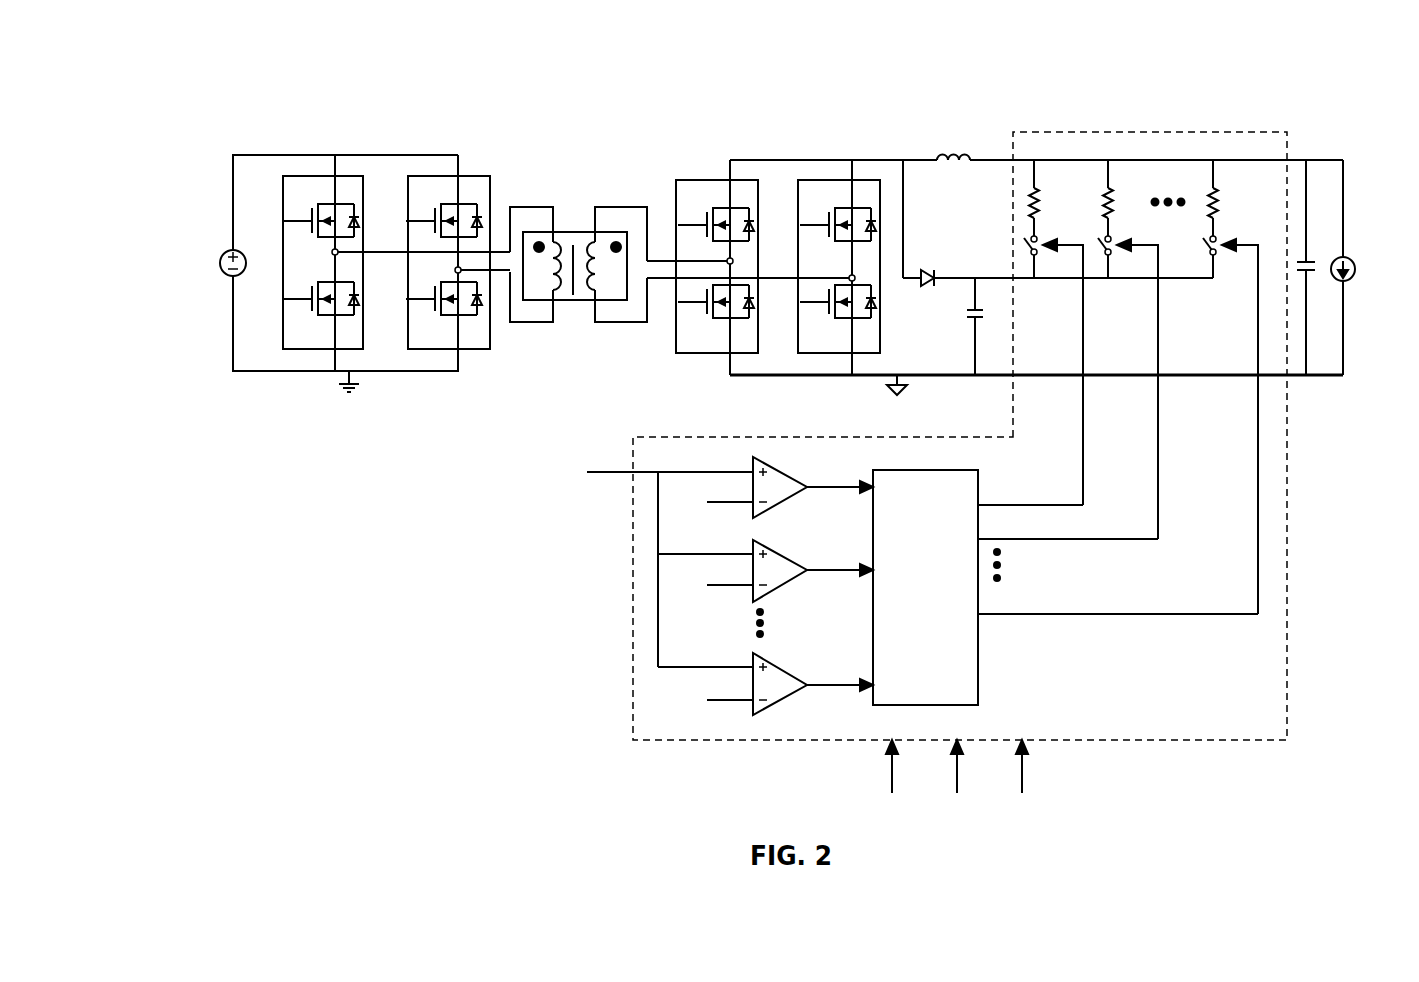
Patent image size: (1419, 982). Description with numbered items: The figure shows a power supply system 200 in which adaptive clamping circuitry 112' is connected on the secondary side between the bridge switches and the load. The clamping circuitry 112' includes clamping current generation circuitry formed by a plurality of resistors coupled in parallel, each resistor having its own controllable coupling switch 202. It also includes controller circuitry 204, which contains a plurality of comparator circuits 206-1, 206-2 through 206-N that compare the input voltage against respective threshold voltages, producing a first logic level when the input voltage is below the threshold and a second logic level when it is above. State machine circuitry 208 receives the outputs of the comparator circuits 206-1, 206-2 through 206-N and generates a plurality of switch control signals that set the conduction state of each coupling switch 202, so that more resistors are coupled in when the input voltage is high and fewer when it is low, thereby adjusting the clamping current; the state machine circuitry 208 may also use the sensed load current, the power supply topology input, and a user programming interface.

The power supply system 200 is at (228, 68).
The adaptive clamping circuitry 112' is at (1096, 347).
The controllable coupling switch 202 is at (1016, 233).
The controller circuitry 204 is at (734, 450).
The comparator circuit 206-1 is at (850, 477).
The comparator circuit 206-2 is at (850, 561).
The comparator circuit 206-N is at (850, 673).
The state machine circuitry 208 is at (940, 639).